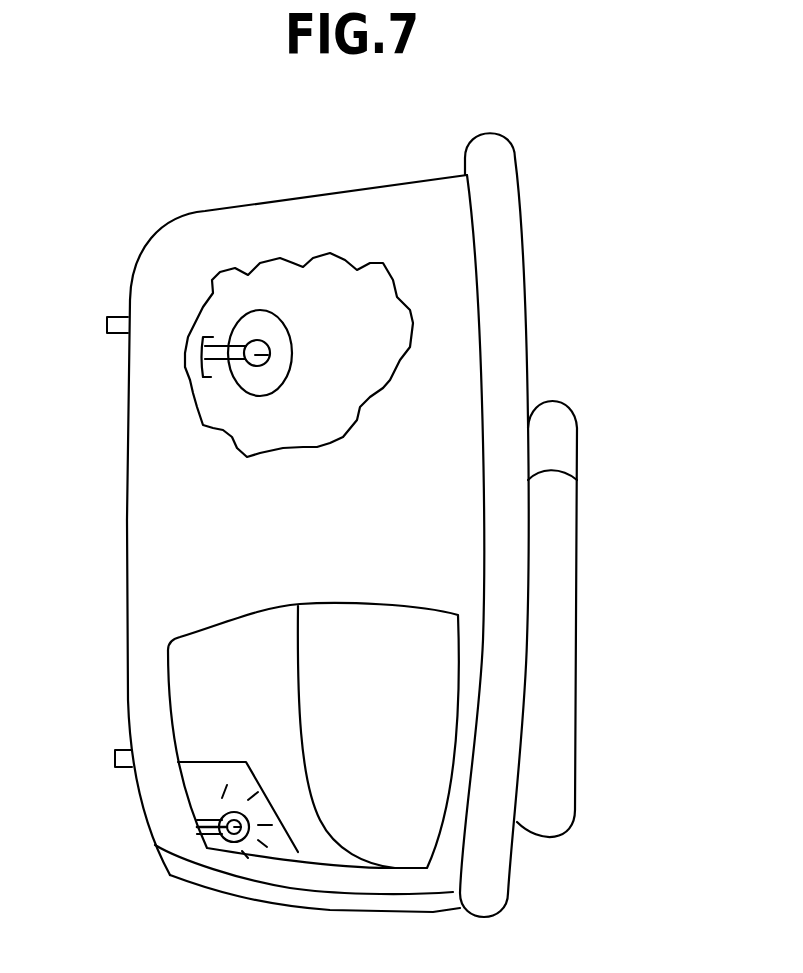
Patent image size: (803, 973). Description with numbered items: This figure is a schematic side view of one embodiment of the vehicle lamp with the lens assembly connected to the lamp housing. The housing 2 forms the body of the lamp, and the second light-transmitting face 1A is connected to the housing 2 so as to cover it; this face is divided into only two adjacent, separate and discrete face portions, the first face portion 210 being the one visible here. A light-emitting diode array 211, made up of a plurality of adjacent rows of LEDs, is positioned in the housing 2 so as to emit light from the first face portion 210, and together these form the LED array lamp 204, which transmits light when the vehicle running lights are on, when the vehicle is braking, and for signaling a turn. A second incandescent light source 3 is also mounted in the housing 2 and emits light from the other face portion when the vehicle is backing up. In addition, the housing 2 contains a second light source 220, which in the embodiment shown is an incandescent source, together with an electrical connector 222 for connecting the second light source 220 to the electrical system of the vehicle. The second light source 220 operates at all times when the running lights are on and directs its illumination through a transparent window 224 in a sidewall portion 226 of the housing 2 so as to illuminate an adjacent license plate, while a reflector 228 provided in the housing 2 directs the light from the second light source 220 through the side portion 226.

The second light-transmitting face 1A is at (517, 182).
The housing 2 is at (359, 205).
The second incandescent light source 3 is at (293, 348).
The LED array lamp 204 is at (368, 848).
The first face portion 210 is at (562, 588).
The light-emitting diode (LED) array 211 is at (577, 480).
The second light source 220 is at (227, 812).
The electrical connector 222 is at (197, 828).
The transparent window 224 is at (218, 883).
The sidewall portion 226 is at (430, 912).
The reflector 228 is at (217, 760).